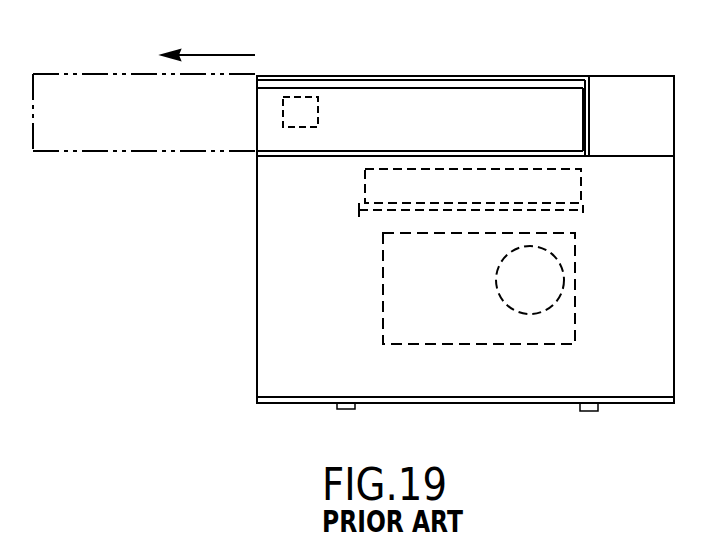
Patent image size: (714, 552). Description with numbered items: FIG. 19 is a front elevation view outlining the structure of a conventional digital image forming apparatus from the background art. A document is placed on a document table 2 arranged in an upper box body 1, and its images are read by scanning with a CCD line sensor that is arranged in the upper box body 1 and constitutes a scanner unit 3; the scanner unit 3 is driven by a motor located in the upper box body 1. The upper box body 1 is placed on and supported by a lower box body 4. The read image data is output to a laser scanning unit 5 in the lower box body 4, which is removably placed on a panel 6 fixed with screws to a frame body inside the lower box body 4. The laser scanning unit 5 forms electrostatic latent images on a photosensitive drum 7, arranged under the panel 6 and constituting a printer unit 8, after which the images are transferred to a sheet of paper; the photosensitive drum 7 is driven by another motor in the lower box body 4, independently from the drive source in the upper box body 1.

The upper box body 1 is at (180, 152).
The document table 2 is at (397, 77).
The scanner unit 3 is at (305, 90).
The lower box body 4 is at (257, 264).
The laser scanning unit 5 is at (581, 191).
The panel 6 is at (588, 212).
The photosensitive drum 7 is at (566, 280).
The printer unit 8 is at (577, 322).